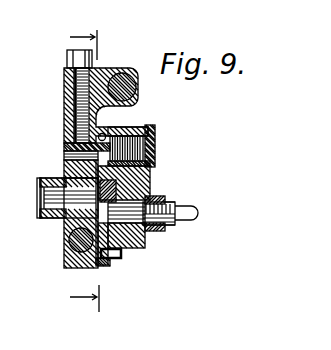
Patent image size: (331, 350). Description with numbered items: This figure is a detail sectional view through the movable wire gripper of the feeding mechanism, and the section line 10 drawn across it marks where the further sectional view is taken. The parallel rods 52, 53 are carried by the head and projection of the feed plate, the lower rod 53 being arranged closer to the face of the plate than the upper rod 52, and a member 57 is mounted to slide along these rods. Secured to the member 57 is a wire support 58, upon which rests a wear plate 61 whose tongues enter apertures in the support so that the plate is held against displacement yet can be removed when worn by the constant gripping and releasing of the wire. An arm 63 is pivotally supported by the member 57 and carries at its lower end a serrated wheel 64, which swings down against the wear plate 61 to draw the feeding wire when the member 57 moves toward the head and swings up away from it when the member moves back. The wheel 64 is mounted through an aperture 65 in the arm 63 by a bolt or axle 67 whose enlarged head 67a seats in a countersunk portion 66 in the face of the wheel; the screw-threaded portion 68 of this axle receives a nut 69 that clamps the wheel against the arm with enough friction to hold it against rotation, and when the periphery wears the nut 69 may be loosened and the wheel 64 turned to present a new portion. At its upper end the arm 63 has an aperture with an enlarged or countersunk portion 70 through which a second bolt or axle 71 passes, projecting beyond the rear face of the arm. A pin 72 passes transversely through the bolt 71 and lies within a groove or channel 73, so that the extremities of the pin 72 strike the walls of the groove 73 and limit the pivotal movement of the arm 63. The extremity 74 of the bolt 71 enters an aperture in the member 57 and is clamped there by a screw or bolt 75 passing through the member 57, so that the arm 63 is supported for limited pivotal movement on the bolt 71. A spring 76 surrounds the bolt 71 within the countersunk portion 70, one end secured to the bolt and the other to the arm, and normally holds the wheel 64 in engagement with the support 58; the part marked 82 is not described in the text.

The section line 10— 10 is at (90, 172).
The upper rod 52 is at (136, 94).
The lower rod 53 is at (66, 258).
The sliding member 57 is at (66, 161).
The wire support 58 is at (110, 266).
The wear plate 61 is at (120, 254).
The arm 63 is at (145, 185).
The serrated wheel 64 is at (150, 198).
The aperture 65 is at (146, 242).
The recess or countersunk portion 66 is at (127, 253).
The bolt or axle 67 is at (199, 214).
The enlarged head 67a is at (70, 232).
The screw-threaded portion 68 is at (166, 226).
The nut 69 is at (172, 205).
The enlarged or countersunk portion 70 is at (140, 128).
The bolt or axle 71 is at (150, 150).
The pin 72 is at (107, 134).
The groove or channel 73 is at (66, 169).
The extremity of the bolt or axle 74 is at (66, 146).
The screw or bolt 75 is at (67, 62).
The spring 76 is at (155, 135).
The cylinder 82 is at (44, 216).